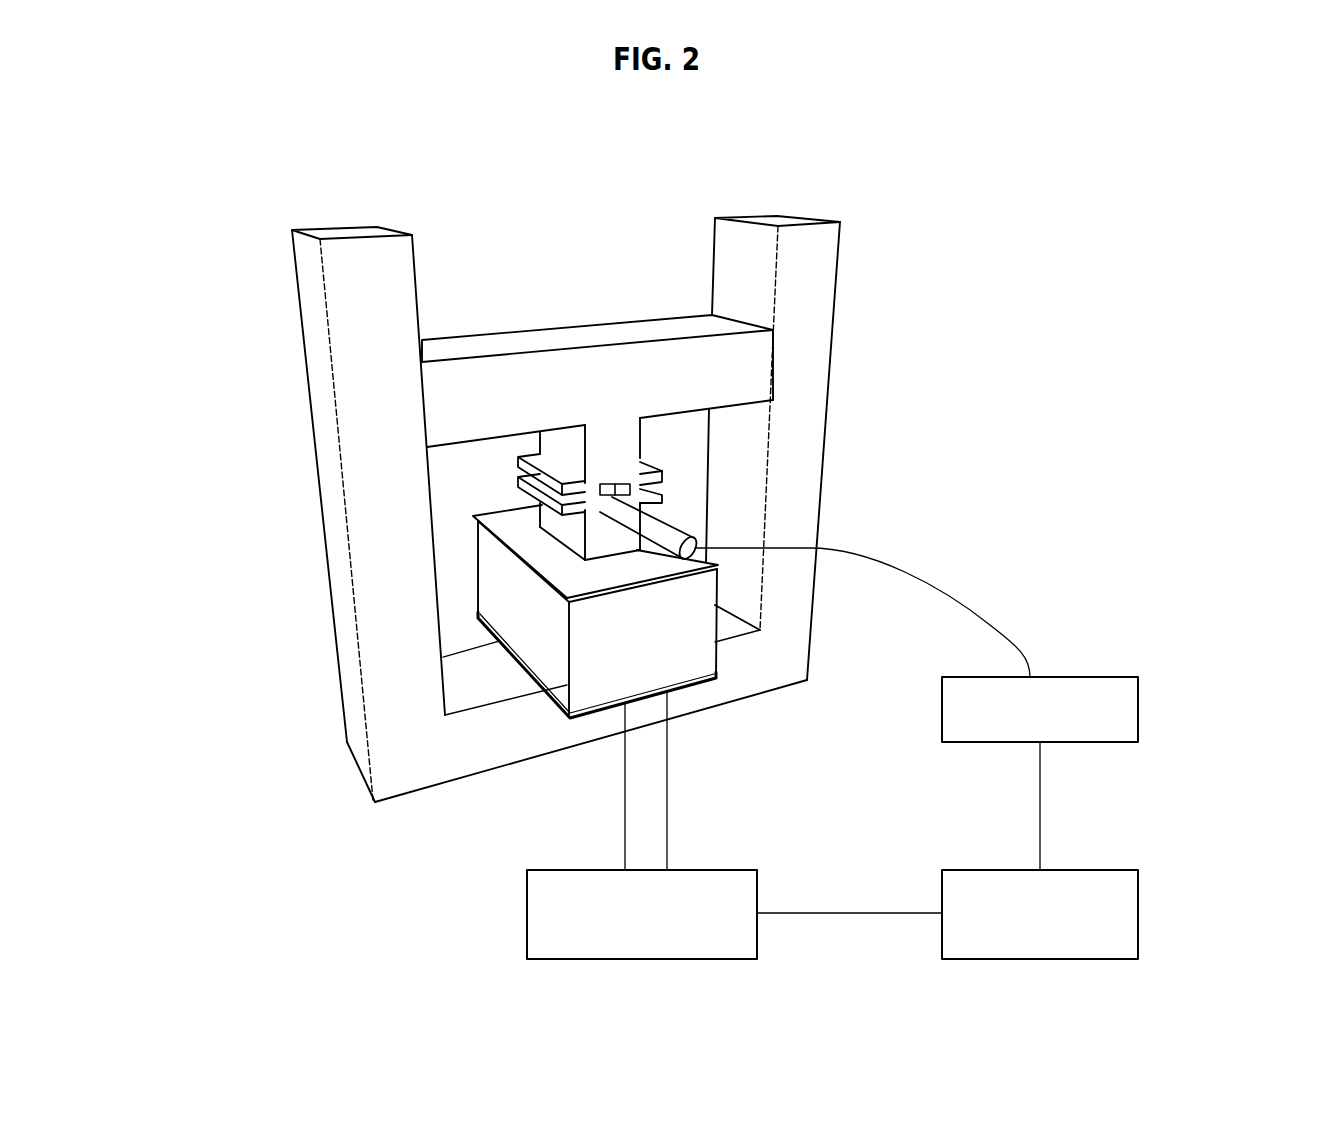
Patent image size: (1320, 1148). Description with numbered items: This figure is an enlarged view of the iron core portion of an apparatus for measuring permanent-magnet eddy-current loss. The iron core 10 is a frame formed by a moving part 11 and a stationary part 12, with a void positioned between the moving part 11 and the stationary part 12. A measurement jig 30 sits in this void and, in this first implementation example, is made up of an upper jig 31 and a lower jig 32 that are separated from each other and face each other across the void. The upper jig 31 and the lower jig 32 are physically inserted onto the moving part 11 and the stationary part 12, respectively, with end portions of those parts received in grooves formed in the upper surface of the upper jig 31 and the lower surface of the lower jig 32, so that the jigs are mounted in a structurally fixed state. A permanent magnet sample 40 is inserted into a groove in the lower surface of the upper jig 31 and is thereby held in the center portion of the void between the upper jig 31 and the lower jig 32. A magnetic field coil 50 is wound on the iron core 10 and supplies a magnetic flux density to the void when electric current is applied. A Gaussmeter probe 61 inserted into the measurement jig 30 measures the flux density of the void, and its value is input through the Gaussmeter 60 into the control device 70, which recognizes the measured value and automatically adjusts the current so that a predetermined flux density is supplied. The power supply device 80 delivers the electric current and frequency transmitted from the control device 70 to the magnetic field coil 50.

The iron core 10 is at (597, 509).
The moving part 11 is at (602, 378).
The stationary part 12 is at (397, 675).
The measurement jig 30 is at (589, 504).
The upper jig 31 is at (517, 459).
The lower jig 32 is at (524, 484).
The permanent magnet sample 40 is at (623, 484).
The magnetic field coil 50 is at (502, 583).
The Gaussmeter 60 is at (1138, 707).
The Gaussmeter probe 61 is at (672, 531).
The control device 70 is at (1138, 913).
The power supply device 80 is at (527, 913).